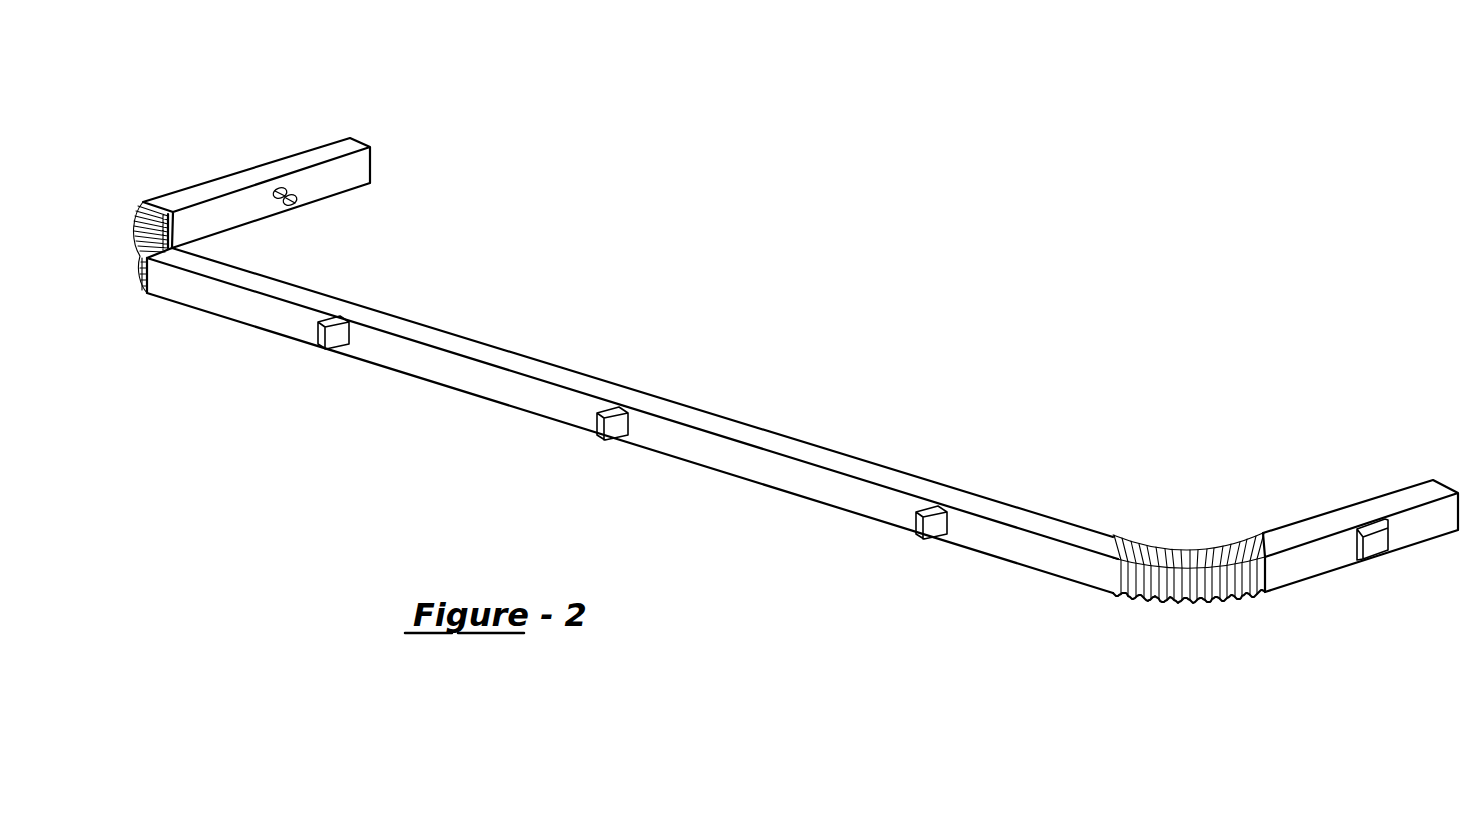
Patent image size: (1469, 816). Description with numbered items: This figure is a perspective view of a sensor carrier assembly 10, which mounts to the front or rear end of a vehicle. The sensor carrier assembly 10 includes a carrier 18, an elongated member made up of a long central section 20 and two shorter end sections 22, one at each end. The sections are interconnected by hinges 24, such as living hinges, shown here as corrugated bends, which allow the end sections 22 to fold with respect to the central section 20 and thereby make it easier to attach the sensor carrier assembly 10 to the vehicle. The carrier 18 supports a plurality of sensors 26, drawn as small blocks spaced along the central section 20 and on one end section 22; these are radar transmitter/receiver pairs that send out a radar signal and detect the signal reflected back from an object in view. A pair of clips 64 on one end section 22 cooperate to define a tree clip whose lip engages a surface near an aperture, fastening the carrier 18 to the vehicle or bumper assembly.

The sensor carrier assembly 10 is at (790, 381).
The carrier 18 is at (790, 425).
The central section 20 is at (737, 428).
The end sections 22 is at (352, 170).
The hinge 24 is at (138, 258).
The sensors 26 is at (255, 166).
The clips 64 is at (298, 193).